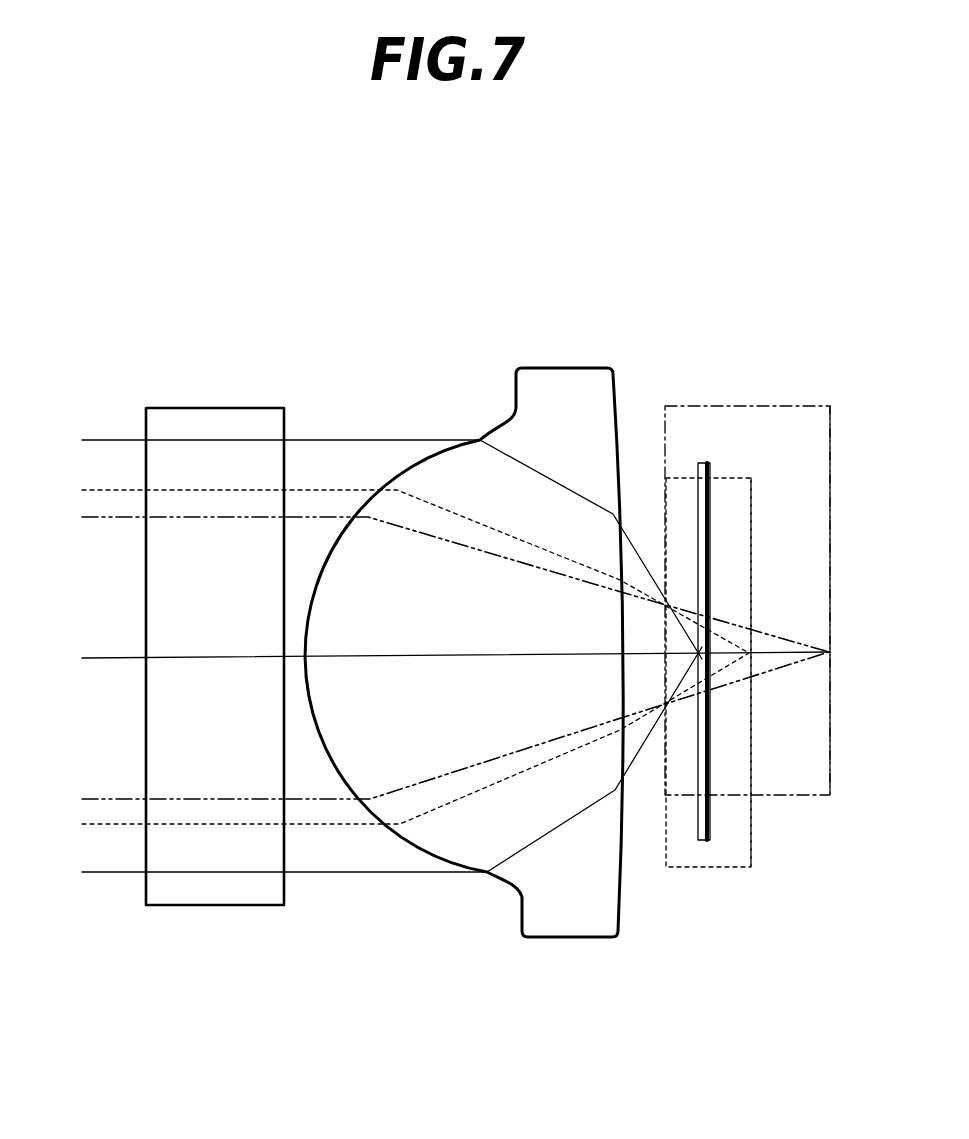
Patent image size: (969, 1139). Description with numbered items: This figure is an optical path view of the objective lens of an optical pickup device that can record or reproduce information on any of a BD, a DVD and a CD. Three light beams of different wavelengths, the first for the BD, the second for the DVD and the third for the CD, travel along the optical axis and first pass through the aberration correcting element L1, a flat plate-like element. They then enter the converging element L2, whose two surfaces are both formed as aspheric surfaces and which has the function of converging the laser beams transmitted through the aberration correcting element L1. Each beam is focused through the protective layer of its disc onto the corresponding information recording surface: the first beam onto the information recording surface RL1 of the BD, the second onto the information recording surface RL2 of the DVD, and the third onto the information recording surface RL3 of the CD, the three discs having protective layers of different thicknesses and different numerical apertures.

The aberration correcting element L1 is at (232, 884).
The converging element L2 is at (576, 918).
The element BD is at (703, 843).
The element DVD is at (736, 868).
The element CD is at (800, 786).
The information recording surface RL1 is at (712, 462).
The information recording surface RL2 is at (752, 495).
The information recording surface RL3 is at (829, 414).